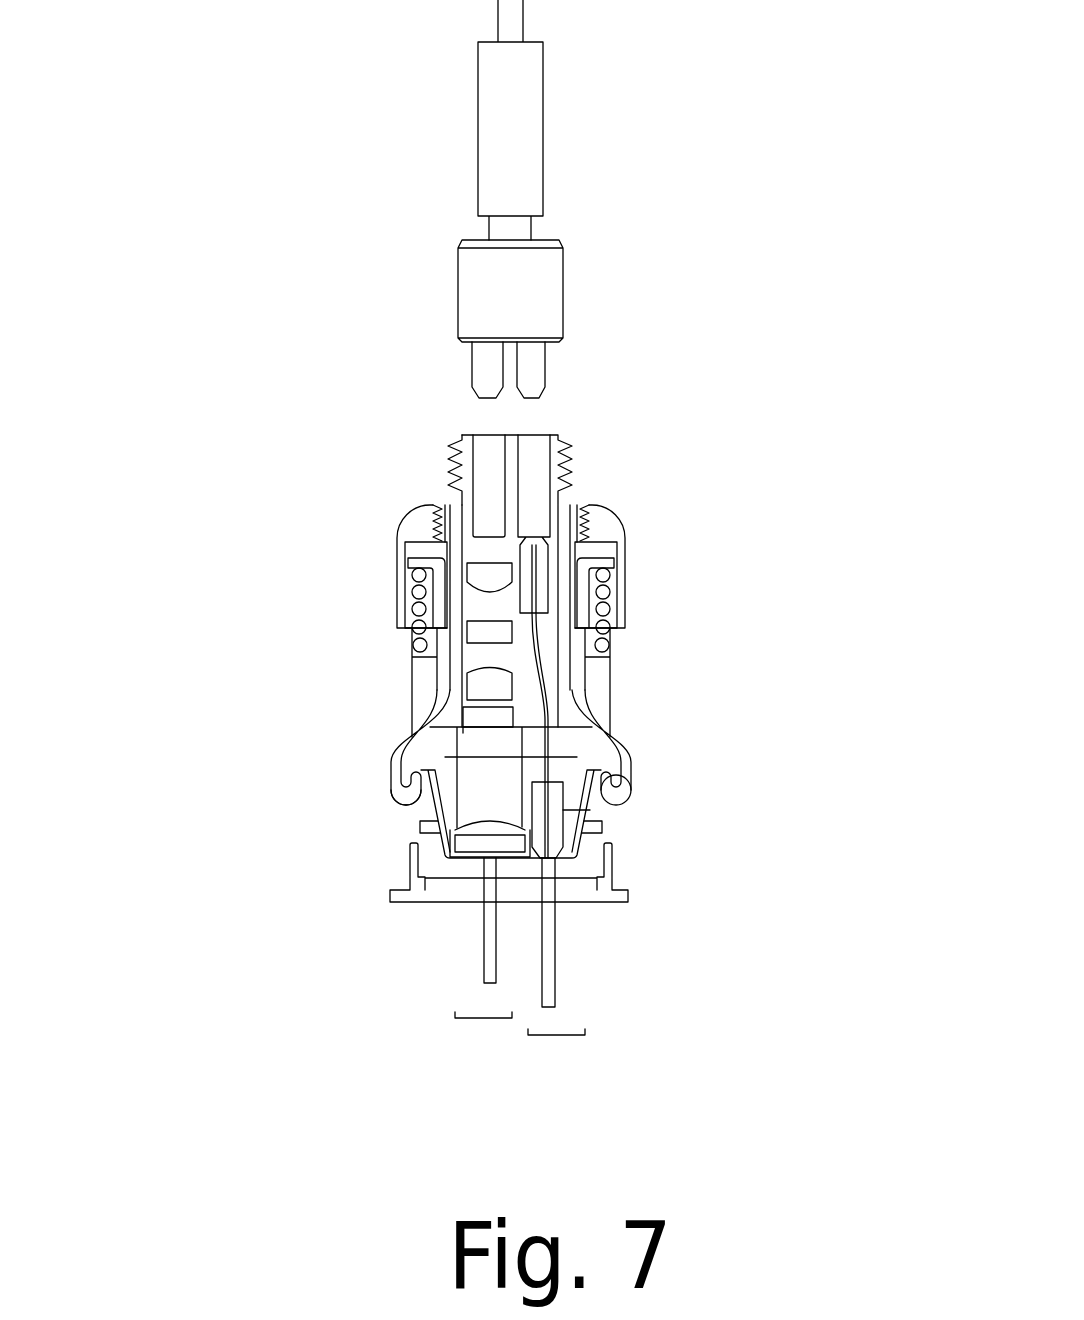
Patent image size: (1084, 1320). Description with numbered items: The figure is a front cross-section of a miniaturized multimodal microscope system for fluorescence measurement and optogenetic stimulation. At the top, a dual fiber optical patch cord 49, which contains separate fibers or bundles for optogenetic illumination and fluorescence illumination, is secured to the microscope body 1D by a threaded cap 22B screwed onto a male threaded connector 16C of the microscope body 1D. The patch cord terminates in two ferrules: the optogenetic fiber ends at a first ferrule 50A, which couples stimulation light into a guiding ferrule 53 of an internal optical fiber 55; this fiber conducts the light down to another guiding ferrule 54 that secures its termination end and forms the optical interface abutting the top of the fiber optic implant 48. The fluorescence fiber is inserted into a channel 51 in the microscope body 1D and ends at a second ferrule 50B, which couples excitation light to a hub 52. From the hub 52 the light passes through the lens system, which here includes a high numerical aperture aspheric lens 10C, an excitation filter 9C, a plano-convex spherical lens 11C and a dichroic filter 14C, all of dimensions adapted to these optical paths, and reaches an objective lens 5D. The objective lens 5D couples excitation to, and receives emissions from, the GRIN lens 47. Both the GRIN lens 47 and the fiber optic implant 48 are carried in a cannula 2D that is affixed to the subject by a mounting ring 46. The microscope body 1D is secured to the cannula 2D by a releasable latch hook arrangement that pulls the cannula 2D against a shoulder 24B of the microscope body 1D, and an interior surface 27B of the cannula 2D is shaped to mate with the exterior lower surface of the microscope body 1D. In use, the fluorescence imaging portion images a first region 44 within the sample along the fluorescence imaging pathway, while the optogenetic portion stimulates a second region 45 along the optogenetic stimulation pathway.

The dual fiber optical patch cord 49 is at (525, 6).
The threaded cap 22B is at (555, 305).
The first ferrule 50A is at (553, 363).
The second ferrule 50B is at (480, 368).
The male threaded connector 16C is at (572, 465).
The hub 52 is at (467, 448).
The channel 51 is at (487, 532).
The guiding ferrule 53 is at (552, 582).
The internal optical fiber 55 is at (547, 720).
The guiding ferrule 54 is at (563, 810).
The high numerical aperture aspheric lens 10C is at (467, 580).
The excitation filter 9C is at (465, 635).
The plano-convex spherical lens 11C is at (467, 677).
The microscope body 1D is at (600, 672).
The dichroic filter 14C is at (413, 733).
The shoulder 24B is at (393, 800).
The interior surface 27B is at (422, 835).
The cannula 2D is at (600, 832).
The objective lens 5D is at (470, 850).
The mounting ring 46 is at (612, 870).
The GRIN lens 47 is at (477, 945).
The fiber optic implant 48 is at (557, 940).
The first region 44 is at (483, 1018).
The second region 45 is at (557, 1037).